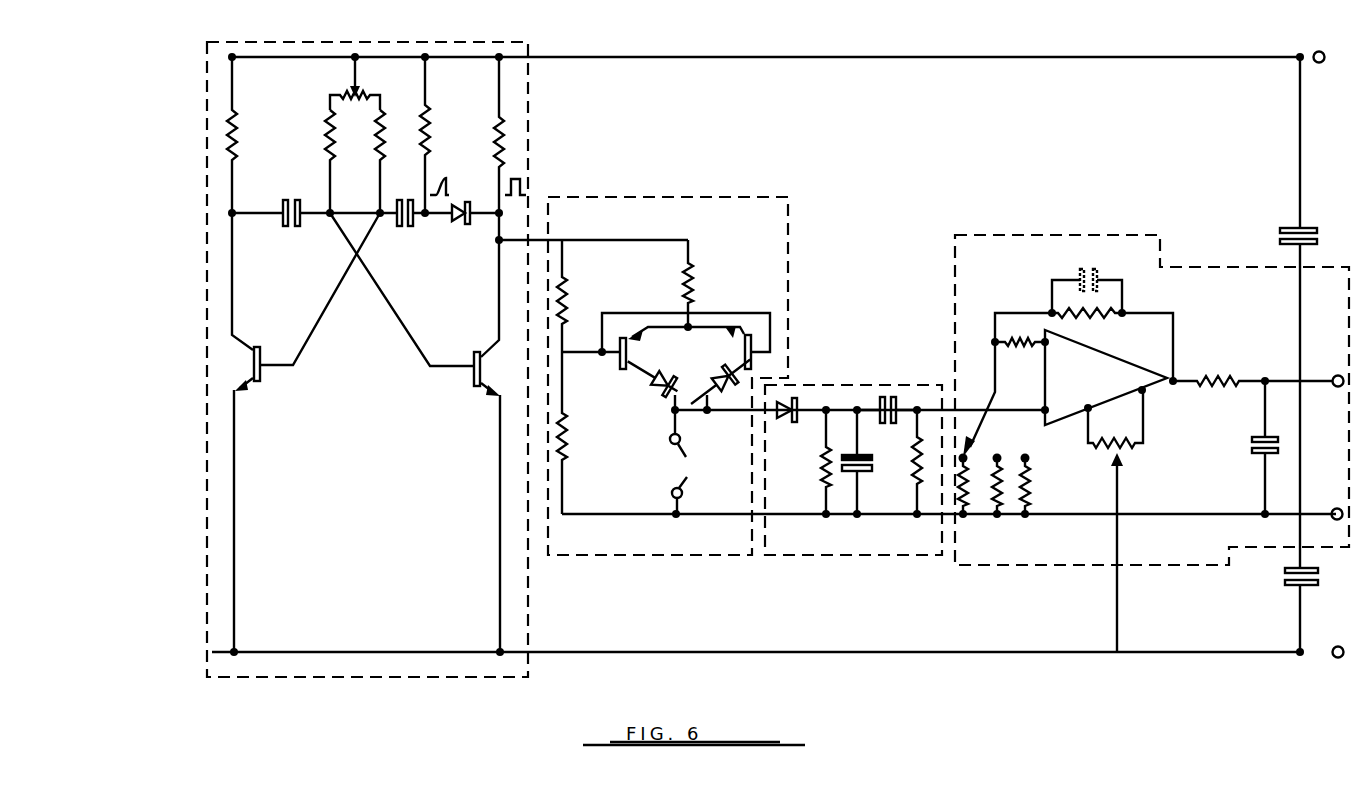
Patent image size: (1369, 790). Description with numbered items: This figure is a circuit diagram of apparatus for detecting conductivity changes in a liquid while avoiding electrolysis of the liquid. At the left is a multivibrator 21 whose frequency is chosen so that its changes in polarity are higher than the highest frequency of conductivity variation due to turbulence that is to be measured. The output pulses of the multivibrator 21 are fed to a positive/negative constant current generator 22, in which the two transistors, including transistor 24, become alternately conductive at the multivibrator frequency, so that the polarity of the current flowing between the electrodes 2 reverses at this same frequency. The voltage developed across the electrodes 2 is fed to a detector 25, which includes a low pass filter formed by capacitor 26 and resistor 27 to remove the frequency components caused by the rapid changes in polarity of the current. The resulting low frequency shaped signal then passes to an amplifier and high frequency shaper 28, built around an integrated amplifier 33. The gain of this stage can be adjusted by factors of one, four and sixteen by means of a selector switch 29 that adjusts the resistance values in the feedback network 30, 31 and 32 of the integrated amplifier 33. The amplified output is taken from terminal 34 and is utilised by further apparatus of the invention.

The electrodes 2 is at (681, 462).
The multivibrator 21 is at (528, 133).
The positive/negative constant current generator 22 is at (727, 197).
The transistor 24 is at (753, 364).
The detector 25 is at (772, 557).
The capacitor 26 is at (870, 469).
The resistor 27 is at (821, 463).
The amplifier and high frequency shaper 28 is at (987, 566).
The selector switch 29 is at (1016, 442).
The feedback network resistor 30 is at (1100, 315).
The feedback network capacitor 31 is at (1096, 268).
The feedback network resistors 32 is at (1028, 521).
The integrated amplifier 33 is at (1092, 378).
The output terminal 34 is at (1258, 372).